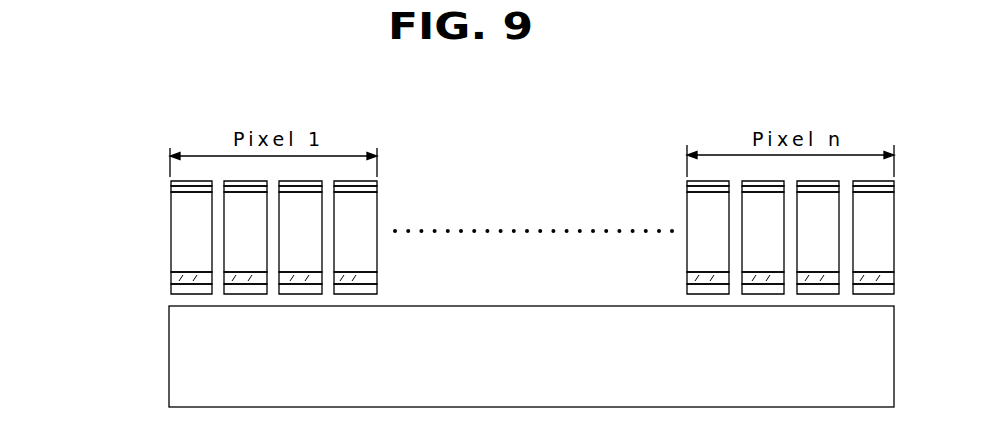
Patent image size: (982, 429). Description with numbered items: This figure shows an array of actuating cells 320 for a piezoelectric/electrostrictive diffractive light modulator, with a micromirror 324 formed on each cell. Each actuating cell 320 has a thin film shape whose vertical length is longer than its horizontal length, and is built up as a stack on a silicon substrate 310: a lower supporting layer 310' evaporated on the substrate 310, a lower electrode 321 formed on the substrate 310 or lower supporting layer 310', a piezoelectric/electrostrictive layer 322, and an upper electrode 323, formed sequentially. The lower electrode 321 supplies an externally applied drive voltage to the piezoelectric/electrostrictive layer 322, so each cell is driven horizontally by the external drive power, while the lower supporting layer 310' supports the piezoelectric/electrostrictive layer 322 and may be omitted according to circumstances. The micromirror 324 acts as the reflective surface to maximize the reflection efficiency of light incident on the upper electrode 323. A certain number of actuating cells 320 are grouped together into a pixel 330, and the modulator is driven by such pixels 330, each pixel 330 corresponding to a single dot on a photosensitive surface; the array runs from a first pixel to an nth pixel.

The pixel 330 is at (437, 117).
The silicon substrate 310 is at (484, 356).
The lower supporting layer 310' is at (484, 302).
The actuating cell 320 is at (74, 178).
The lower electrode 321 is at (171, 276).
The piezoelectric/electrostrictive layer 322 is at (171, 237).
The upper electrode 323 is at (171, 190).
The micromirror 324 is at (171, 183).